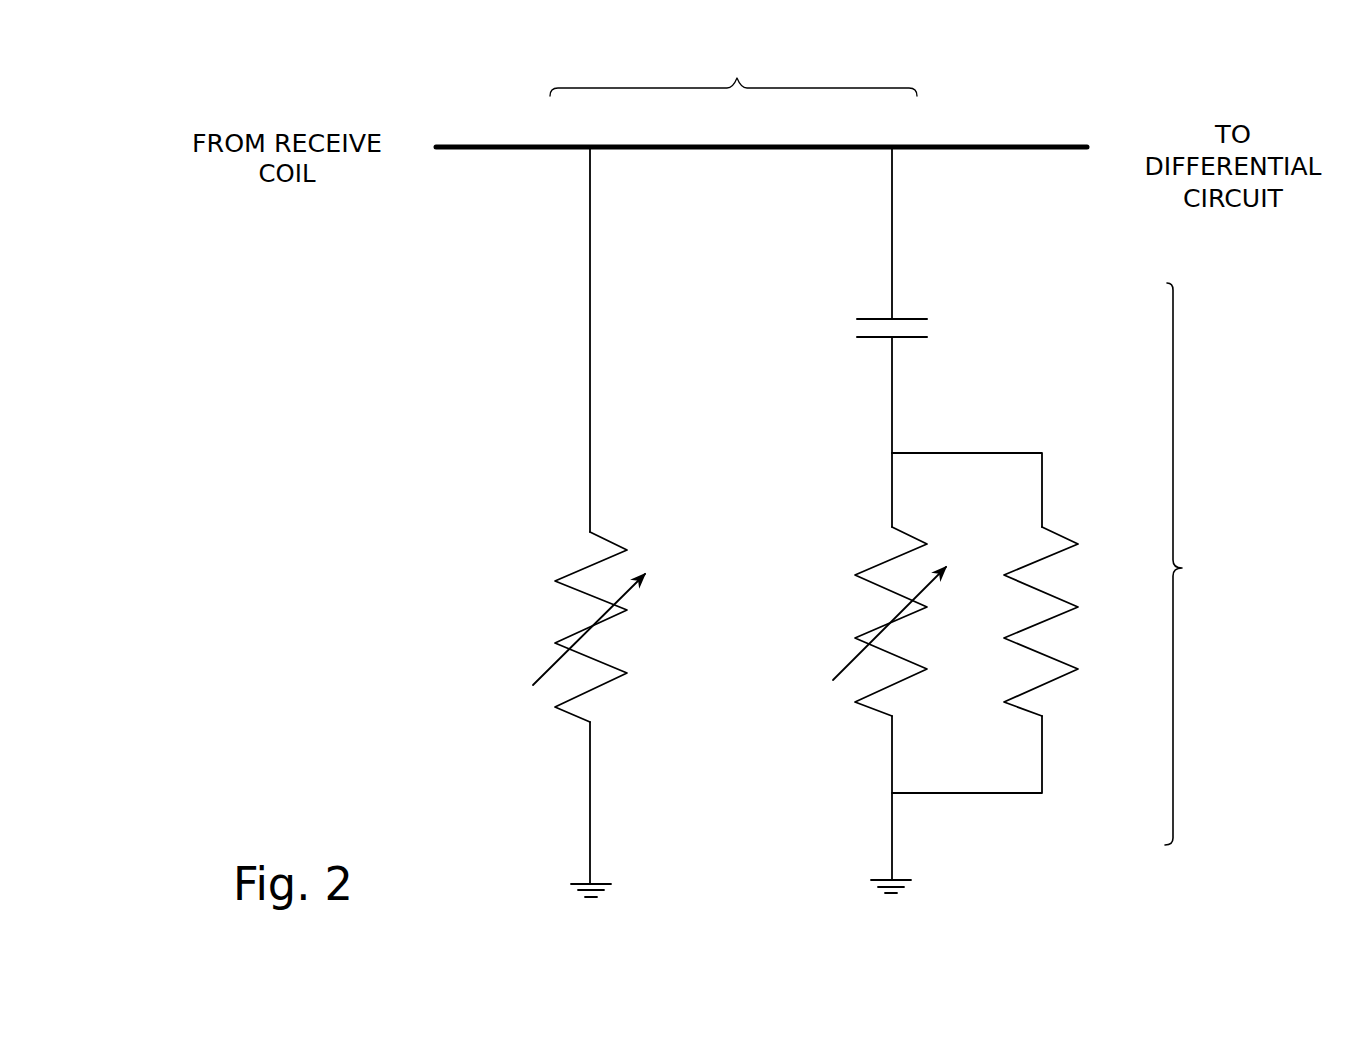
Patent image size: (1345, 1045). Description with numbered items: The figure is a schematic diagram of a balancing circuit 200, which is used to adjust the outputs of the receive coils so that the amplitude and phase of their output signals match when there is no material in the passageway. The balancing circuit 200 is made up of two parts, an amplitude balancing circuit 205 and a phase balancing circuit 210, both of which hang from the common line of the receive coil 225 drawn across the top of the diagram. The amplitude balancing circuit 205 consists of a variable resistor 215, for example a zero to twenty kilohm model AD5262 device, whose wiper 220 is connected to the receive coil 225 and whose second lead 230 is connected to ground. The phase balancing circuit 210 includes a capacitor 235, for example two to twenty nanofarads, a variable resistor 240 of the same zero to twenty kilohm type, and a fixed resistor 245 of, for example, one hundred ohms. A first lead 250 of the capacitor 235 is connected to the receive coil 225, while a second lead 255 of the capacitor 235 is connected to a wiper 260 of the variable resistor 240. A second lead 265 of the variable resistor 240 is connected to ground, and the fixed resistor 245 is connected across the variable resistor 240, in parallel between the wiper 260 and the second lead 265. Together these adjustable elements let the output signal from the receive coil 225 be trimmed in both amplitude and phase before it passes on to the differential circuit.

The balancing circuit 200 is at (733, 60).
The amplitude balancing circuit 205 is at (560, 498).
The phase balancing circuit 210 is at (1007, 521).
The variable resistor 215 is at (615, 622).
The wiper 220 is at (590, 314).
The receive coil 225 is at (770, 150).
The second lead 230 is at (591, 753).
The capacitor 235 is at (917, 319).
The variable resistor 240 is at (870, 566).
The fixed resistor 245 is at (1067, 537).
The first lead 250 is at (893, 265).
The second lead 255 is at (892, 366).
The wiper 260 is at (891, 477).
The second lead 265 is at (891, 751).